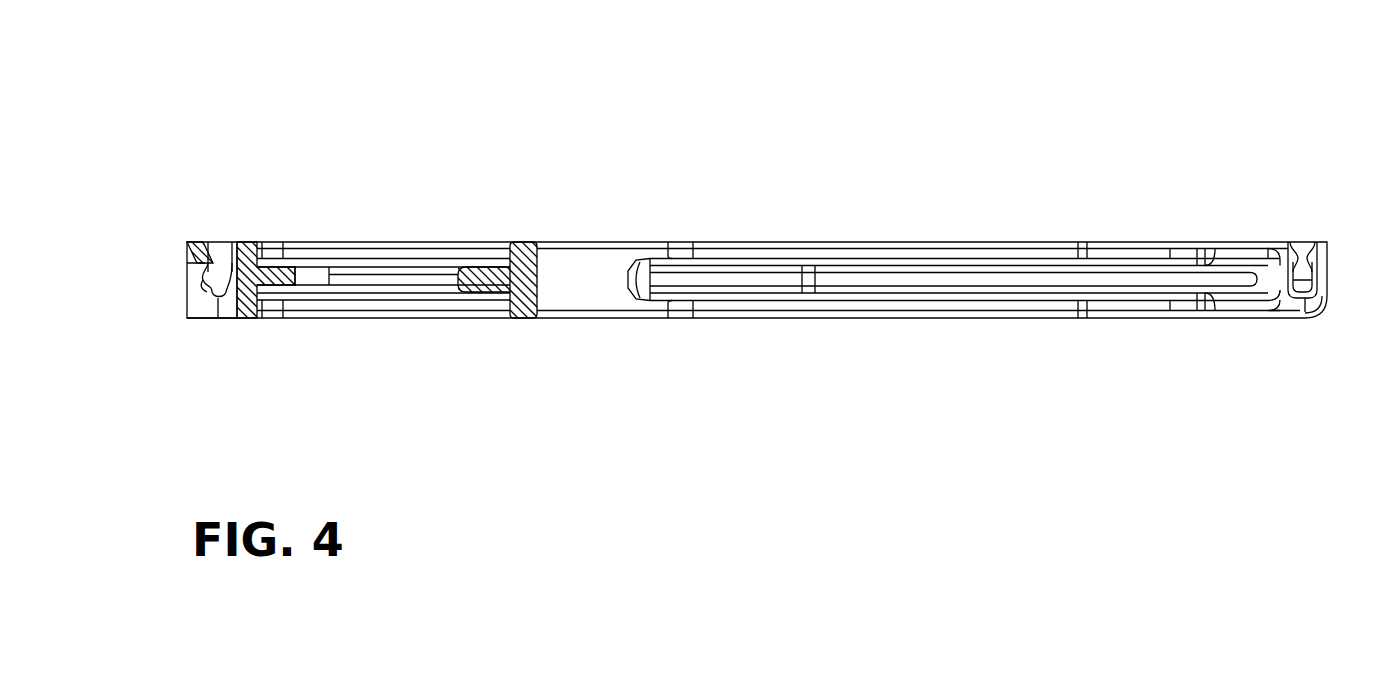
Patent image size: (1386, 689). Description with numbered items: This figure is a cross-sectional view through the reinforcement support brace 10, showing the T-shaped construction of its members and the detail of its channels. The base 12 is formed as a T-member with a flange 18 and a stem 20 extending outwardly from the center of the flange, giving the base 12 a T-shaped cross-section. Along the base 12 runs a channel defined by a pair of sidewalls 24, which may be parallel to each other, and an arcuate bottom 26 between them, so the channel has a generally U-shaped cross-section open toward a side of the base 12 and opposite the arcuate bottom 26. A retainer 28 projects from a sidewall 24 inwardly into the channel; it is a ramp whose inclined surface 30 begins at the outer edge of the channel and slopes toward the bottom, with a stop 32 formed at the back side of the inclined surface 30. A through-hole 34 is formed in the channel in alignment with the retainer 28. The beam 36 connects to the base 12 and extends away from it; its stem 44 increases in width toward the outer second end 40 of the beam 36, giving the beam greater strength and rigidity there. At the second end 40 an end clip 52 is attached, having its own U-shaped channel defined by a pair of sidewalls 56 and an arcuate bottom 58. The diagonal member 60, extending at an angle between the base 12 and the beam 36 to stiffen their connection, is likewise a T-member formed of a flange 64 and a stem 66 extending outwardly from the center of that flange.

The support brace 10 is at (753, 118).
The base 12 is at (297, 263).
The flange 18 is at (258, 320).
The stem 20 is at (298, 282).
The sidewalls 24 is at (229, 258).
The arcuate bottom 26 is at (209, 300).
The retainer 28 is at (192, 243).
The inclined surface 30 is at (208, 252).
The stop 32 is at (221, 270).
The through-hole 34 is at (218, 320).
The beam 36 is at (993, 244).
The second end 40 is at (1266, 241).
The stem 44 is at (1063, 280).
The end clip 52 is at (1331, 294).
The sidewalls 56 is at (1296, 252).
The arcuate bottom 58 is at (1306, 303).
The diagonal member 60 is at (547, 249).
The flange 64 is at (511, 300).
The stem 66 is at (456, 285).